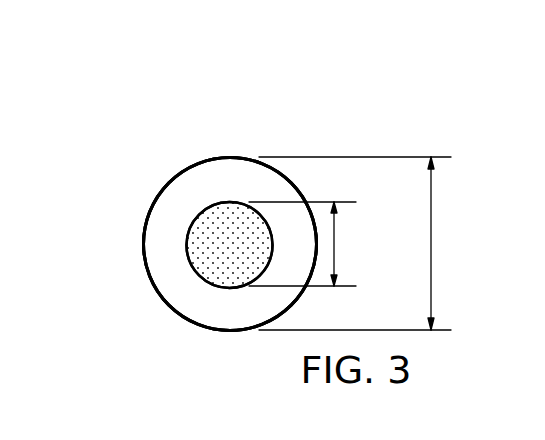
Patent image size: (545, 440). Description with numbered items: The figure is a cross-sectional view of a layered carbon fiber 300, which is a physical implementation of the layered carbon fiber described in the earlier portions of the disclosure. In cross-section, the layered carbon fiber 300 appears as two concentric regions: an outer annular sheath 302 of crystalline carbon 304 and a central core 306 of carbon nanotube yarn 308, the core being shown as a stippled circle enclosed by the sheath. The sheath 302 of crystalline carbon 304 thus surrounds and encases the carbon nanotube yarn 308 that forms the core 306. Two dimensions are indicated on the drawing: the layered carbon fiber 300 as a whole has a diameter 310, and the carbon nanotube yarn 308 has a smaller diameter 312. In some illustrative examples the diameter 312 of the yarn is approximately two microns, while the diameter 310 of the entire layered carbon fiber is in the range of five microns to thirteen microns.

The layered carbon fiber 300 is at (376, 92).
The sheath 302 is at (143, 245).
The crystalline carbon 304 is at (178, 183).
The core 306 is at (227, 201).
The carbon nanotube yarn 308 is at (214, 273).
The diameter 310 is at (431, 243).
The diameter 312 is at (335, 242).